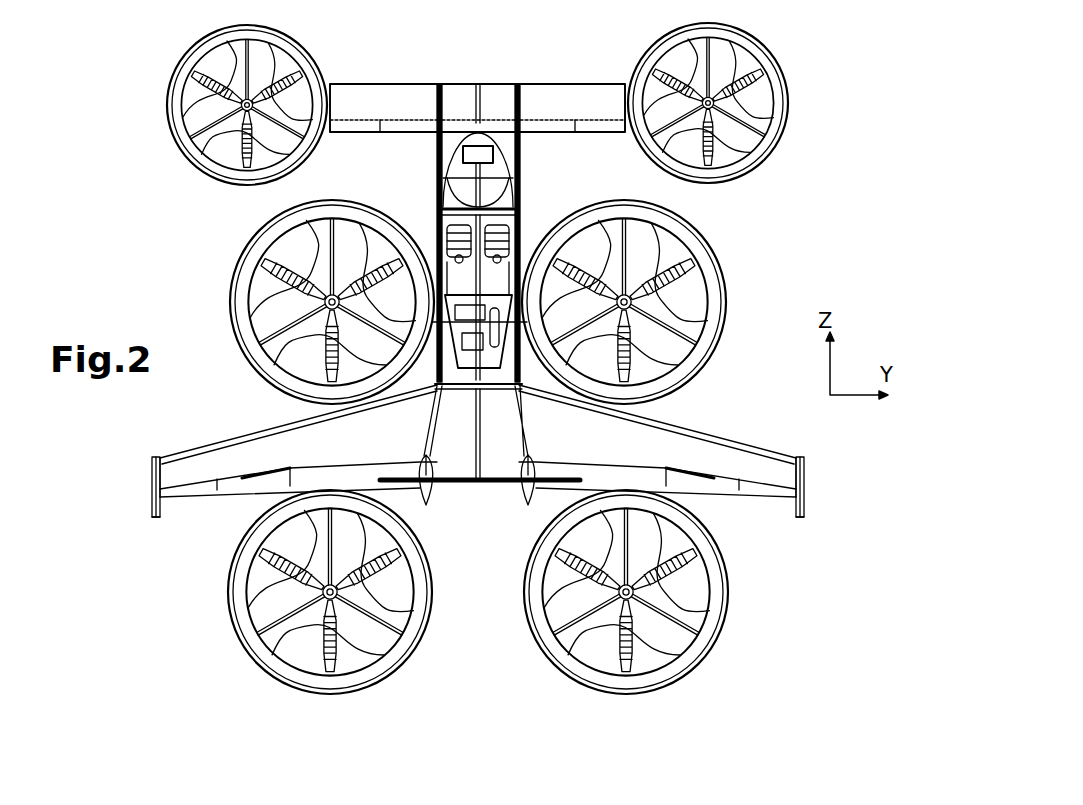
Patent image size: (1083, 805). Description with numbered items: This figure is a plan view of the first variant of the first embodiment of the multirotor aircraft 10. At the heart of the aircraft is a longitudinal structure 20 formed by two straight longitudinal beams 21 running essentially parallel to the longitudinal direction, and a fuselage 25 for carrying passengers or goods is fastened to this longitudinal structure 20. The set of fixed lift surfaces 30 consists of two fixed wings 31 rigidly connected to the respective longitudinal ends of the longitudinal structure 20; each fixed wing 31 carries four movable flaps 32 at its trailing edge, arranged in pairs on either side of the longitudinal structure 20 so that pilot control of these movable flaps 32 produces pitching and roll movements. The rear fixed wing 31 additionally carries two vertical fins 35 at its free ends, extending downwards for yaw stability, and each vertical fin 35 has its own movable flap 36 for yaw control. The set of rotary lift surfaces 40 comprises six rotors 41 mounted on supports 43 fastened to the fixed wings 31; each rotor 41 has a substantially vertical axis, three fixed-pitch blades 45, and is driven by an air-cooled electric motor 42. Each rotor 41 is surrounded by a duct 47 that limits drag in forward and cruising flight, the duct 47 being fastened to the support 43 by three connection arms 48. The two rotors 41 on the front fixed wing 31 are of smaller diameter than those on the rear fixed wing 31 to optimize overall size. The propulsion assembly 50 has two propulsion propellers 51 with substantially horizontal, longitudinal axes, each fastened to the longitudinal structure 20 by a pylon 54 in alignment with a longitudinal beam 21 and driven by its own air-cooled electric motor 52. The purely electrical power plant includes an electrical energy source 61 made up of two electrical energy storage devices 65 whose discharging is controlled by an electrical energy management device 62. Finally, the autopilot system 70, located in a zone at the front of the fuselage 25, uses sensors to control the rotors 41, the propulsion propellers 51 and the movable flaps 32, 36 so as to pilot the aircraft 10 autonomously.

The multirotor aircraft 10 is at (750, 644).
The longitudinal structure 20 is at (482, 256).
The longitudinal beams 21 is at (437, 176).
The fuselage 25 is at (520, 222).
The set of fixed lift surfaces 30 is at (484, 259).
The fixed wings 31 is at (505, 83).
The movable flaps 32 is at (382, 84).
The vertical fins 35 is at (150, 462).
The movable flap 36 is at (156, 518).
The set of rotary lift surfaces 40 is at (477, 729).
The rotors 41 is at (324, 720).
The electric motor 42 is at (192, 152).
The supports 43 is at (300, 96).
The blades 45 is at (232, 166).
The duct 47 is at (182, 46).
The connection arms 48 is at (170, 112).
The propulsion assembly 50 is at (480, 484).
The propulsion propellers 51 is at (480, 484).
The electric motor 52 is at (520, 490).
The pylon 54 is at (524, 452).
The electrical energy source 61 is at (430, 384).
The electrical energy management device 62 is at (522, 385).
The electrical energy storage devices 65 is at (447, 311).
The autopilot system 70 is at (470, 145).